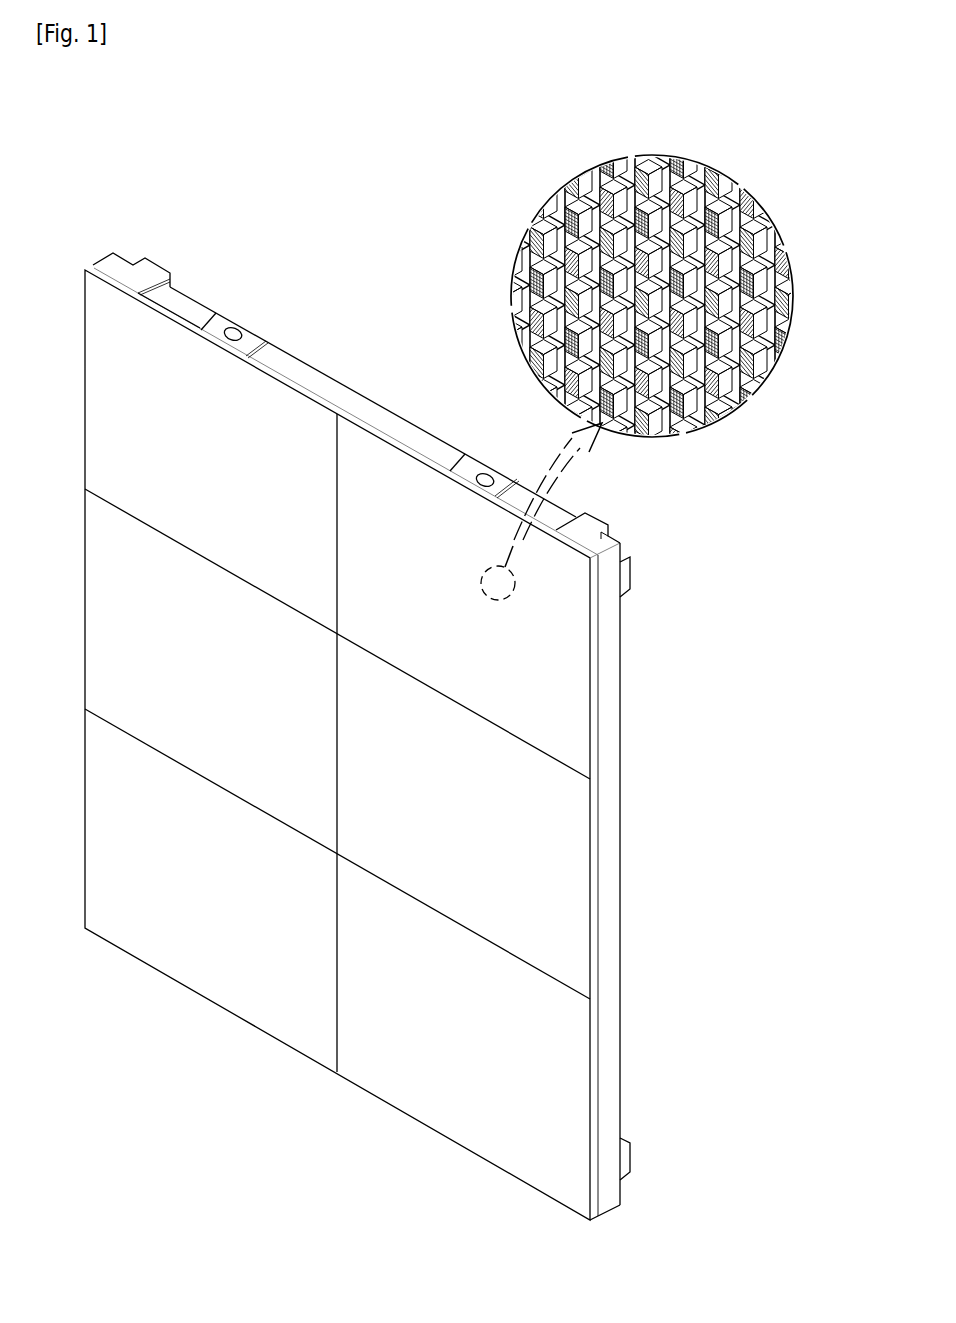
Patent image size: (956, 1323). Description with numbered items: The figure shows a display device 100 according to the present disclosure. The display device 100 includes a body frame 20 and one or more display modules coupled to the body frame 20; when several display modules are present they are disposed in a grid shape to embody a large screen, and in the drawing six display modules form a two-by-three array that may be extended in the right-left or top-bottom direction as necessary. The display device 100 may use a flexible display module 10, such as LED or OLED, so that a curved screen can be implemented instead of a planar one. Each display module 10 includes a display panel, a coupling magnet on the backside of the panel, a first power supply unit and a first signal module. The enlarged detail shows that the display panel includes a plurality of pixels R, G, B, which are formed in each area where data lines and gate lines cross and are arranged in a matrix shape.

The display device 100 is at (349, 348).
The display module 10 is at (573, 710).
The body frame 20 is at (409, 437).
The pixel R is at (648, 287).
The pixel G is at (613, 253).
The pixel B is at (577, 240).